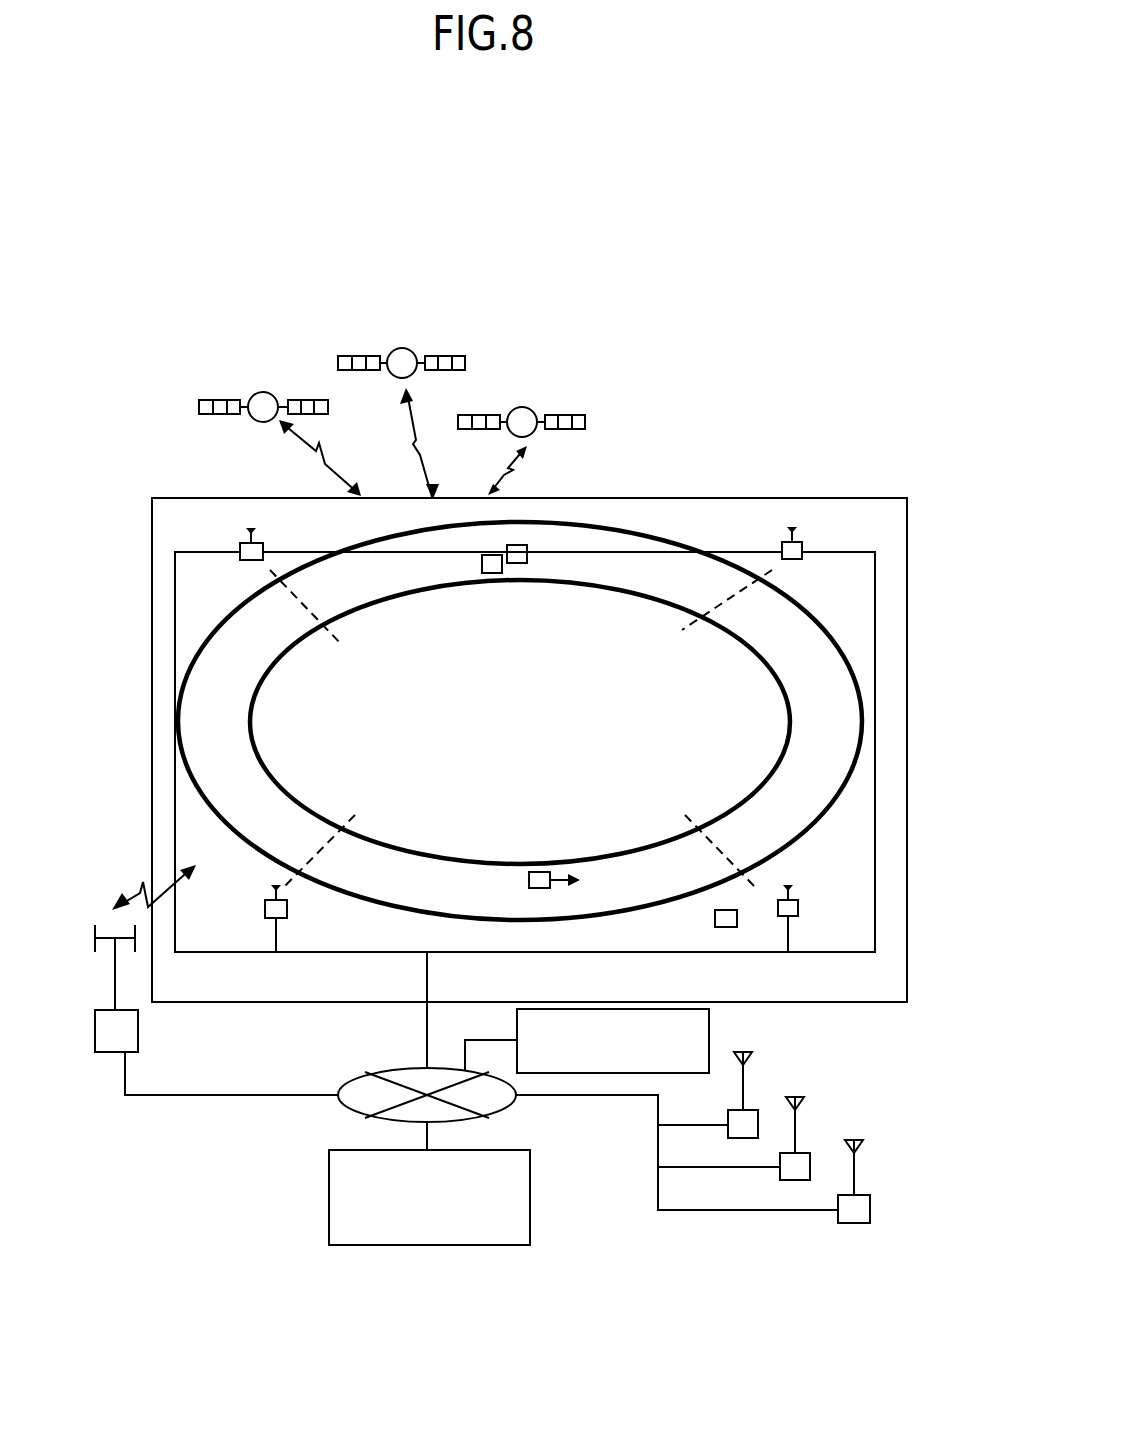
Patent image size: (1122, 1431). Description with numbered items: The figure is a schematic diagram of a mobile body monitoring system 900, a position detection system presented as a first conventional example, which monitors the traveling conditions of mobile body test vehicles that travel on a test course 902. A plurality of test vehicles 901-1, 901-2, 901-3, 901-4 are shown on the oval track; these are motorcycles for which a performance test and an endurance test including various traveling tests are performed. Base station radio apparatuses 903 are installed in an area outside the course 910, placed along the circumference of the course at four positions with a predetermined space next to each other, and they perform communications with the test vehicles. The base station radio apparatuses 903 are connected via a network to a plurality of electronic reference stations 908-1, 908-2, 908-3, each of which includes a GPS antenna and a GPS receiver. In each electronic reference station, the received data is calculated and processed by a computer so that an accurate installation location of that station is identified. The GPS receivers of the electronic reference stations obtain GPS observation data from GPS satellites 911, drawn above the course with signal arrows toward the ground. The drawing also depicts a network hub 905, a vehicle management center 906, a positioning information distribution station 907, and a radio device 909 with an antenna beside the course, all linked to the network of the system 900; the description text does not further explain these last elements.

The mobile body monitoring system 900 is at (758, 280).
The test vehicle 901-1 is at (541, 870).
The test vehicle 901-2 is at (733, 927).
The test vehicle 901-3 is at (483, 573).
The test vehicle 901-4 is at (516, 563).
The test course 902 is at (640, 555).
The base station radio apparatus 903 is at (237, 541).
The network hub 905 is at (333, 1107).
The vehicle management center 906 is at (578, 1073).
The positioning information distribution station 907 is at (462, 1245).
The electronic reference station 908-1 is at (750, 1138).
The electronic reference station 908-2 is at (796, 1180).
The electronic reference station 908-3 is at (854, 1223).
The wireless communication device 909 is at (107, 1057).
The course 910 is at (215, 903).
The GPS satellite 911 is at (310, 403).